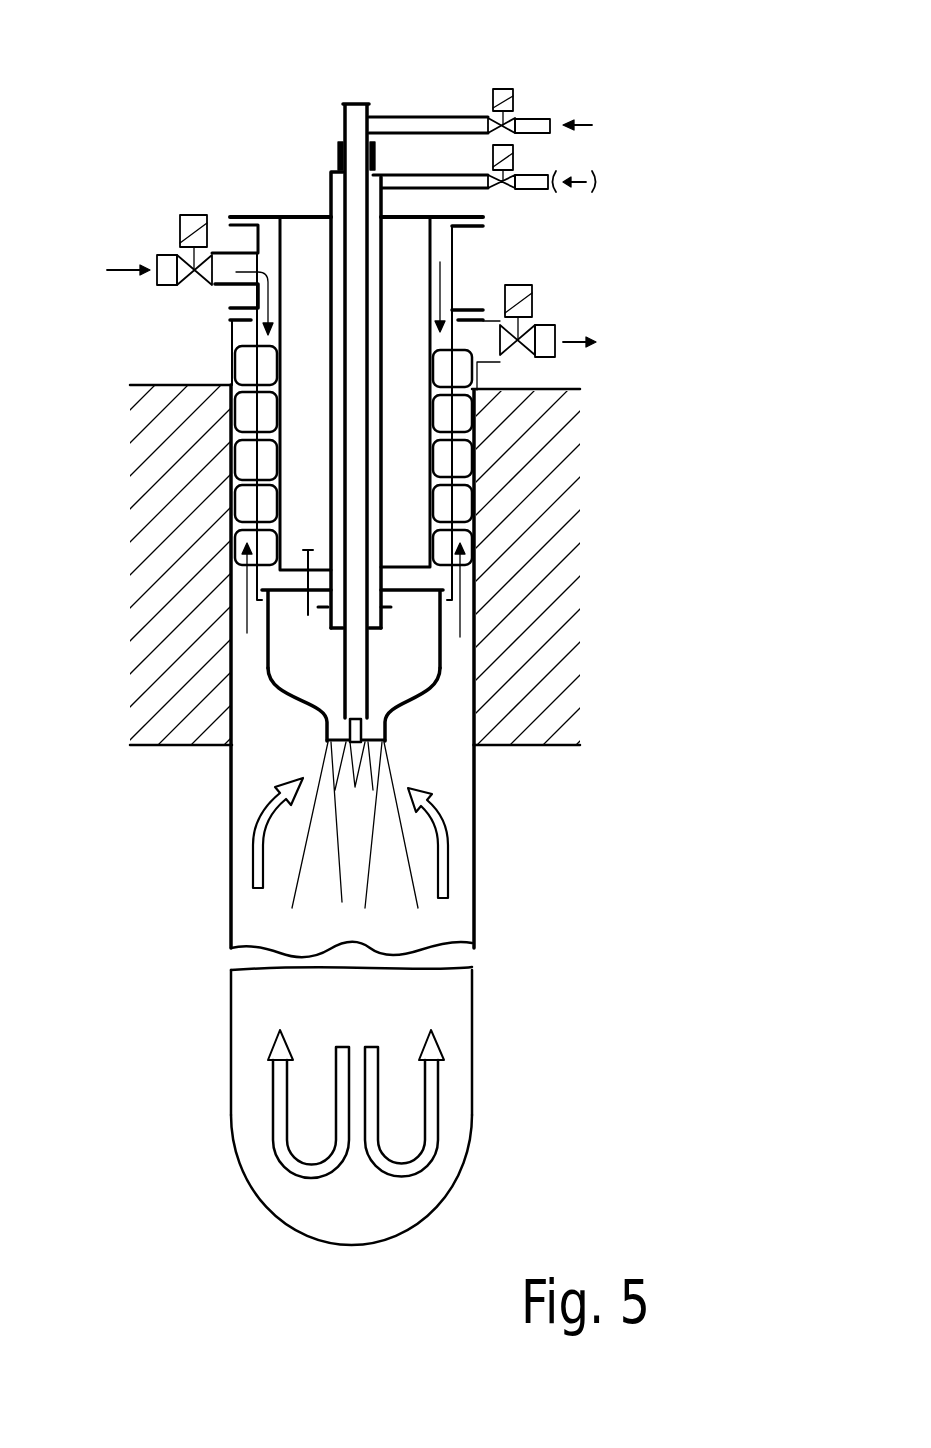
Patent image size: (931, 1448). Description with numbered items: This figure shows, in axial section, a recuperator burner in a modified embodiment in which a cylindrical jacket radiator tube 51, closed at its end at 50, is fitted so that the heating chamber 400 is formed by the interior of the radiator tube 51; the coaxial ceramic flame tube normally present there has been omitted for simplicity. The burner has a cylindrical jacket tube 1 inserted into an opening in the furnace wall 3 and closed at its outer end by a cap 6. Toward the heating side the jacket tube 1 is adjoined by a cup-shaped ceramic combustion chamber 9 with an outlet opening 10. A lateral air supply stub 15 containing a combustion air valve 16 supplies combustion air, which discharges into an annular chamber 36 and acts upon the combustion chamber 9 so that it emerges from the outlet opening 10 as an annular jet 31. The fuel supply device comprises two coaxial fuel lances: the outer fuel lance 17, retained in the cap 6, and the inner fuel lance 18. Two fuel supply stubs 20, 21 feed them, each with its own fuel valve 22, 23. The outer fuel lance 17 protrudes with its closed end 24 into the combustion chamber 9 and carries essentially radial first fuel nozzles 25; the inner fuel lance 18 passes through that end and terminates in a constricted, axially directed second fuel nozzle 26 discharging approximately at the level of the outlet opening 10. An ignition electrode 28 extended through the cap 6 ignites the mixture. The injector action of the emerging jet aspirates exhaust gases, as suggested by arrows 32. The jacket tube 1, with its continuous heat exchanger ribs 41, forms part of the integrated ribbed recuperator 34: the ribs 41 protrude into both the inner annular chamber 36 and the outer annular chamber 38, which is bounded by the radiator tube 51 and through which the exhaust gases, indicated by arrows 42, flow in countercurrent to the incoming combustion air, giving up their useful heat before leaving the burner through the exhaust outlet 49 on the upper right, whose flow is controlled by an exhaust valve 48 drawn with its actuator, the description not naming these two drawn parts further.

The jacket tube 1 is at (238, 431).
The furnace wall 3 is at (552, 589).
The cap 6 is at (300, 215).
The combustion chamber 9 is at (287, 696).
The outlet opening 10 is at (329, 735).
The air supply stub 15 is at (225, 273).
The combustion air valve 16 is at (192, 268).
The outer fuel lance 17 is at (383, 292).
The inner fuel lance 18 is at (352, 114).
The fuel supply stub 20 is at (420, 183).
The fuel supply stub 21 is at (418, 123).
The first fuel valve 22 is at (502, 189).
The second fuel valve 23 is at (510, 119).
The end of outer fuel lance 24 is at (373, 633).
The first fuel nozzles 25 is at (380, 608).
The second fuel nozzle 26 is at (386, 733).
The ignition electrode 28 is at (306, 602).
The annular jet 31 is at (320, 888).
The arrows 32 is at (260, 864).
The ribbed recuperator 34 is at (479, 481).
The annular chamber 36 is at (270, 344).
The second annular chamber 38 is at (237, 522).
The heat exchanger ribs 41 is at (462, 505).
The arrows 42 is at (462, 622).
The outlet valve 48 is at (532, 293).
The gas outlet 49 is at (492, 350).
The closed end 50 is at (292, 1231).
The jacket radiator tube 51 is at (463, 870).
The heating chamber 400 is at (428, 1003).